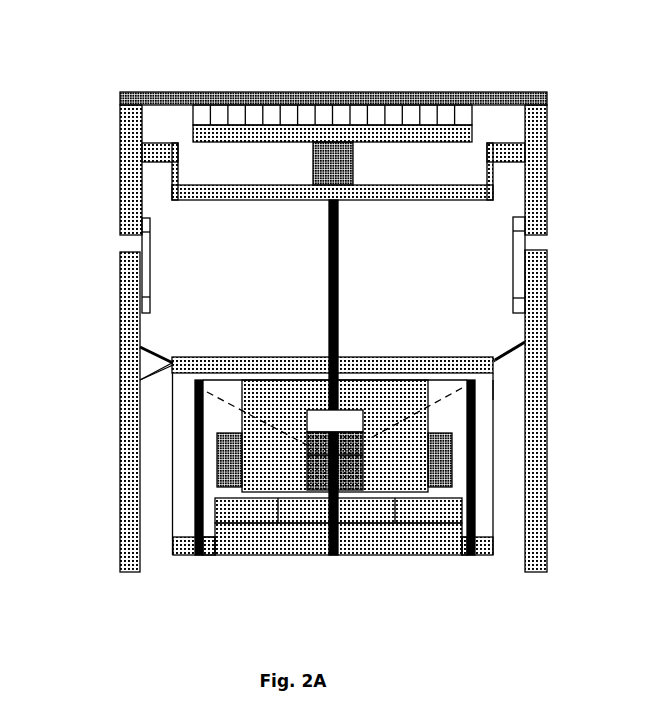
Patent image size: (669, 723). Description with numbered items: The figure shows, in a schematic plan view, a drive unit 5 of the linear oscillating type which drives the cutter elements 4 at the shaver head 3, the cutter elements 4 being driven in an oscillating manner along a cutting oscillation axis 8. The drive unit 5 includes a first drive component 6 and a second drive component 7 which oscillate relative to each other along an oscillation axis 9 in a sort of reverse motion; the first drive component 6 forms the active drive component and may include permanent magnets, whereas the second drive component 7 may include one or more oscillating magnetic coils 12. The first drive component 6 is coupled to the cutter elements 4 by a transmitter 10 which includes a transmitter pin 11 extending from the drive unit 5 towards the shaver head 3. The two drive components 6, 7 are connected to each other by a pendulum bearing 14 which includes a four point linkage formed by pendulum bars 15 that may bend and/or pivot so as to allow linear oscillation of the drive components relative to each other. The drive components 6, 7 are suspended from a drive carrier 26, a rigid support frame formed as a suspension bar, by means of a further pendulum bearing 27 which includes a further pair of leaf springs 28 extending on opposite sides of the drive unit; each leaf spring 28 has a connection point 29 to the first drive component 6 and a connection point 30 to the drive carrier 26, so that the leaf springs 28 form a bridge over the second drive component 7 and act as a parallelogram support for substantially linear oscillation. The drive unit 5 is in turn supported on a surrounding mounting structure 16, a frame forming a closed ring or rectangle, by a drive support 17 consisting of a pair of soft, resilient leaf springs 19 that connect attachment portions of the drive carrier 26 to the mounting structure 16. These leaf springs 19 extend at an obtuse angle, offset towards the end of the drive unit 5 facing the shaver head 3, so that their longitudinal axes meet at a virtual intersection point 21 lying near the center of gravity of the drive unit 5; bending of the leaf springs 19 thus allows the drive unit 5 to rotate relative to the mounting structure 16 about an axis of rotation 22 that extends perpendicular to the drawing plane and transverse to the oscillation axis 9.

The shaver head 3 is at (222, 83).
The cutter elements 4 is at (425, 117).
The drive unit 5 is at (298, 568).
The first drive component 6 is at (389, 549).
The second drive component 7 is at (400, 398).
The cutting oscillation axis 8 is at (383, 157).
The oscillation axis 9 is at (305, 55).
The transmitter 10 is at (348, 267).
The transmitter pin 11 is at (340, 297).
The magnetic coils 12 is at (217, 450).
The pendulum bearing 14 is at (480, 435).
The pendulum bars 15 is at (193, 522).
The mounting structure 16 is at (128, 323).
The drive support 17 is at (158, 343).
The leaf springs 19 is at (165, 351).
The virtual intersection point 21 is at (353, 460).
The axis of rotation 22 is at (305, 468).
The drive carrier 26 is at (252, 367).
The further pendulum bearing 27 is at (500, 388).
The leaf springs 28 is at (172, 413).
The connection point 29 is at (173, 553).
The connection point 30 is at (140, 380).